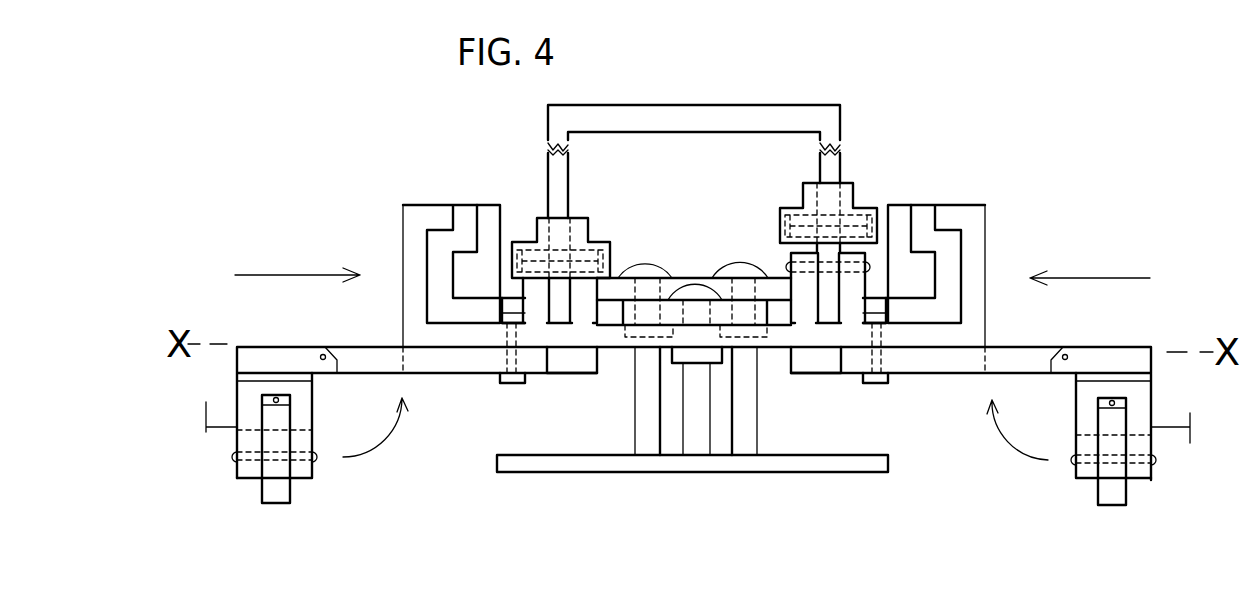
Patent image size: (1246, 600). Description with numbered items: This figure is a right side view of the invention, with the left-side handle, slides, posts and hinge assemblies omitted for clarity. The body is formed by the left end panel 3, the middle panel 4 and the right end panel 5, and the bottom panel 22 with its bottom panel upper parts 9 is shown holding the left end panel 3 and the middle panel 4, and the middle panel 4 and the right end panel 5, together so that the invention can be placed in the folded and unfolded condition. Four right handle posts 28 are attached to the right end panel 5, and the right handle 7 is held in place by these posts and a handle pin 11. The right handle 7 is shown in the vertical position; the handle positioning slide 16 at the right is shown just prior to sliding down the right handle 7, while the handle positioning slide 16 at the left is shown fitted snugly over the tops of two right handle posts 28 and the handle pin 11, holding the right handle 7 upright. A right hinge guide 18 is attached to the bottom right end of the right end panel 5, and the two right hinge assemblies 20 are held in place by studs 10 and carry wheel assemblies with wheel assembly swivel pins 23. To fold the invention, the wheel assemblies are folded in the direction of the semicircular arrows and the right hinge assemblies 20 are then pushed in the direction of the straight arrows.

The left end panel 3 is at (497, 205).
The middle panel 4 is at (460, 205).
The right end panel 5 is at (415, 205).
The right handle 7 is at (702, 105).
The bottom panel upper parts 9 is at (723, 277).
The stud 10 is at (502, 382).
The handle pin 11 is at (558, 260).
The handle positioning slide 16 is at (538, 218).
The right hinge guide 18 is at (570, 373).
The right hinge assembly 20 is at (312, 347).
The bottom panel 22 is at (679, 472).
The wheel assembly swivel pin 23 is at (273, 398).
The right handle post 28 is at (522, 290).